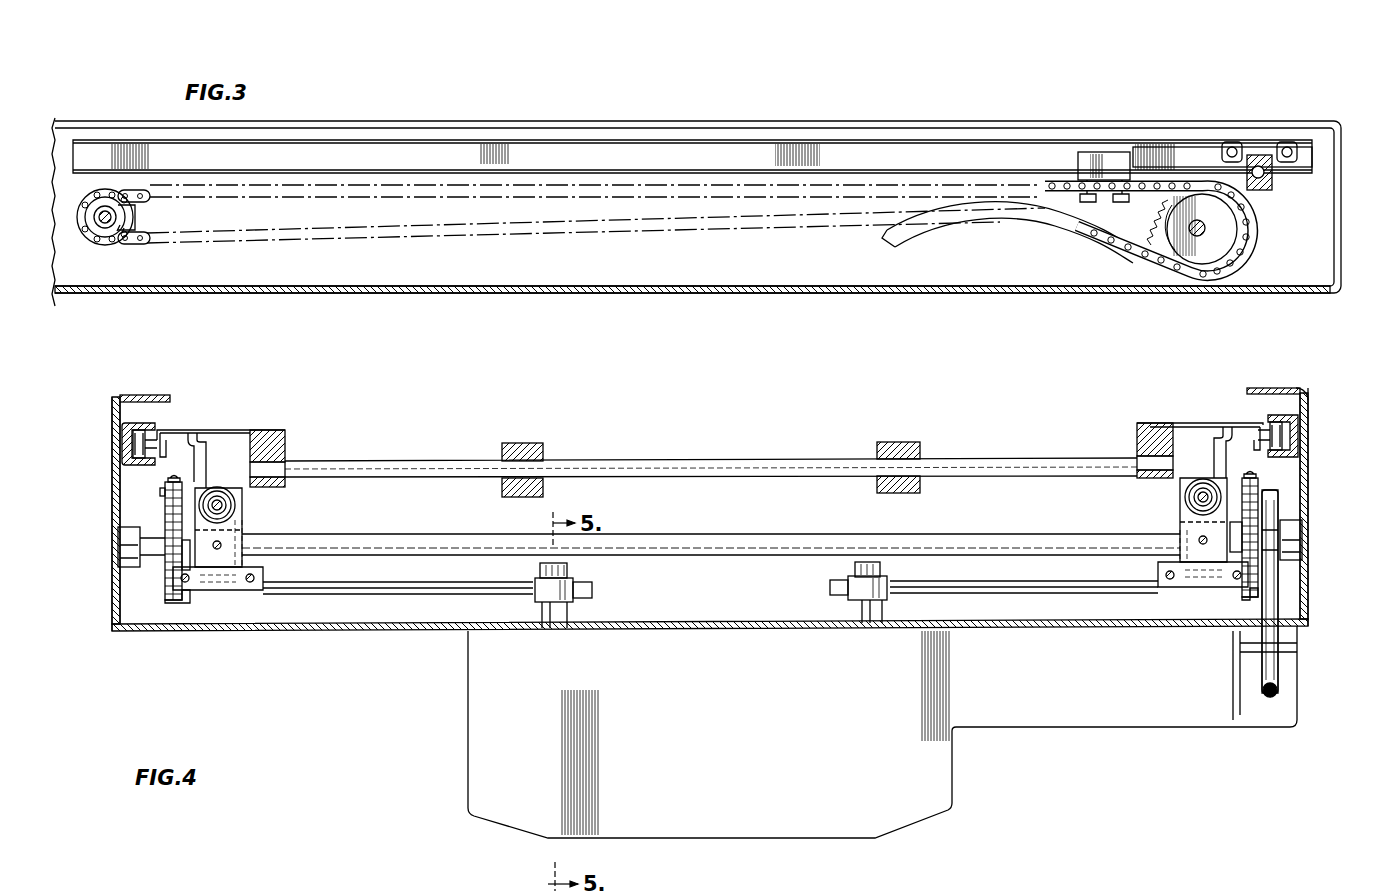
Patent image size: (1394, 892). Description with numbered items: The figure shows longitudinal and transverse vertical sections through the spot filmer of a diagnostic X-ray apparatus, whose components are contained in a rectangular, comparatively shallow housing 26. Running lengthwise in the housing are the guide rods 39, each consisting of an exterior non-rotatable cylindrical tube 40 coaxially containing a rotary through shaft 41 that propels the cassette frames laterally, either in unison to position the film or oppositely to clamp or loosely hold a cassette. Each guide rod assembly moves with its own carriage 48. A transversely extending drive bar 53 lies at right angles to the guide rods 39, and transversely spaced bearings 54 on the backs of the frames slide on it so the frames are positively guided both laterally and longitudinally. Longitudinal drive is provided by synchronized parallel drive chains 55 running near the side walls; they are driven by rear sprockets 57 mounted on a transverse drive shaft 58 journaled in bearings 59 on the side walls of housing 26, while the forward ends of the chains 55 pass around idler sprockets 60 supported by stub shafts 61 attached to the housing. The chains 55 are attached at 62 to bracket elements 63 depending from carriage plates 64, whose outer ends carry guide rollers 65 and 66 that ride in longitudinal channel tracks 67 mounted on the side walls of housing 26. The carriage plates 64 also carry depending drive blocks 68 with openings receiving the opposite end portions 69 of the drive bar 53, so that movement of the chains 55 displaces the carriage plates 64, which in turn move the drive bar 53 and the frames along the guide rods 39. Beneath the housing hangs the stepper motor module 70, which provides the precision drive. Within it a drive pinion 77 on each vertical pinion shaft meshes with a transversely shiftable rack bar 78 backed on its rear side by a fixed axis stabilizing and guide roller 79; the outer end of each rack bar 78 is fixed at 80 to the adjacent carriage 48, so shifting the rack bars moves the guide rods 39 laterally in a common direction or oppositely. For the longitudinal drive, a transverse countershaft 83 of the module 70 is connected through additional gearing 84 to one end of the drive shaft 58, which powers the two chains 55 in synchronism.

In FIG. 3, the housing 26 is at (1274, 121).
In FIG. 4, the housing 26 is at (1308, 500).
In FIG. 4, the guide rods 39 is at (236, 505).
In FIG. 4, the cylindrical tube 40 is at (216, 487).
In FIG. 4, the rotary through shaft 41 is at (199, 510).
In FIG. 4, the carriage 48 is at (240, 518).
In FIG. 3, the drive bar 53 is at (1262, 184).
In FIG. 4, the drive bar 53 is at (779, 464).
In FIG. 4, the bearings 54 is at (526, 443).
In FIG. 3, the drive chains 55 is at (130, 244).
In FIG. 4, the drive chains 55 is at (165, 500).
In FIG. 3, the rear sprockets 57 is at (1190, 256).
In FIG. 4, the rear sprockets 57 is at (165, 602).
In FIG. 3, the transverse drive shaft 58 is at (1207, 231).
In FIG. 4, the transverse drive shaft 58 is at (779, 538).
In FIG. 4, the bearings 59 is at (128, 545).
In FIG. 3, the idler sprockets 60 is at (138, 214).
In FIG. 3, the stub shafts 61 is at (118, 250).
In FIG. 3, the chain attachment 62 is at (1115, 176).
In FIG. 4, the chain attachment 62 is at (170, 480).
In FIG. 3, the bracket elements 63 is at (1085, 156).
In FIG. 4, the bracket elements 63 is at (196, 470).
In FIG. 3, the carriage plates 64 is at (1168, 150).
In FIG. 4, the carriage plates 64 is at (170, 431).
In FIG. 3, the guide roller 65 is at (1232, 143).
In FIG. 4, the guide roller 65 is at (126, 430).
In FIG. 4, the guide roller 66 is at (124, 450).
In FIG. 3, the channel tracks 67 is at (748, 140).
In FIG. 4, the channel tracks 67 is at (140, 424).
In FIG. 4, the drive blocks 68 is at (287, 443).
In FIG. 4, the end portions 69 is at (259, 462).
In FIG. 4, the stepper motor module 70 is at (465, 722).
In FIG. 4, the drive pinion 77 is at (568, 571).
In FIG. 4, the rack bar 78 is at (358, 596).
In FIG. 4, the guide roller 79 is at (555, 610).
In FIG. 4, the rack bar fixing 80 is at (250, 592).
In FIG. 4, the countershaft 83 is at (1278, 690).
In FIG. 4, the gearing 84 is at (1278, 636).